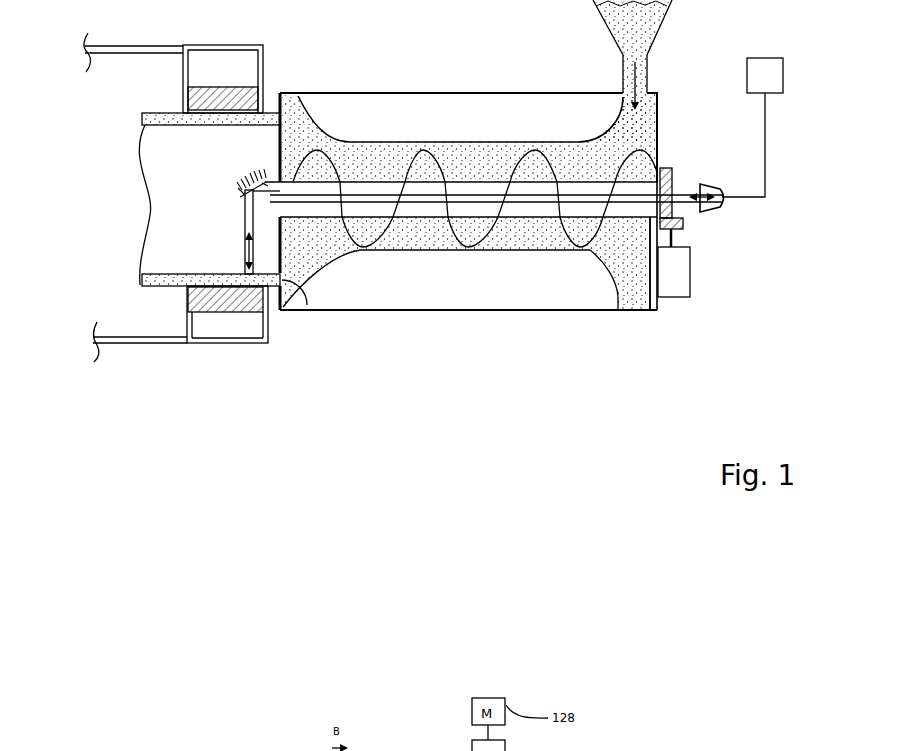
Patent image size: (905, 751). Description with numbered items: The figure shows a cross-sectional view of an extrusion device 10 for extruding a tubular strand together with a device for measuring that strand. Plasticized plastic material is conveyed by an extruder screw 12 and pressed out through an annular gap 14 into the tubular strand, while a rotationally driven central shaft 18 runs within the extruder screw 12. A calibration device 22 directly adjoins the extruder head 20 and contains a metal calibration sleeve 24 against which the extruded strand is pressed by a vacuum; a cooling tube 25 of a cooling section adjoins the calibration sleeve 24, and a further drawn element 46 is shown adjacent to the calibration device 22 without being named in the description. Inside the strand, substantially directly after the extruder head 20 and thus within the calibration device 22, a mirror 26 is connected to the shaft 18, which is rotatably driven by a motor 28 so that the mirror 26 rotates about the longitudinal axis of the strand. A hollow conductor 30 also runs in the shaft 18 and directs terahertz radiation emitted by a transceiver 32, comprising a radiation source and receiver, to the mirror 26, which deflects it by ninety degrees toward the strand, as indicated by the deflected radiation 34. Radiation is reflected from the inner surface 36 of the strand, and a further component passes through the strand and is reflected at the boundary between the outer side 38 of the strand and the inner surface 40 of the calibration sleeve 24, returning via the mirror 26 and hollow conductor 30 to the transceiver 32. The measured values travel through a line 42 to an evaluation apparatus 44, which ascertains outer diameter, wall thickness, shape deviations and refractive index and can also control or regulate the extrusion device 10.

The extrusion device 10 is at (462, 84).
The extruder screw 12 is at (558, 215).
The annular gap 14 is at (298, 306).
The central shaft 18 is at (623, 212).
The extruder head 20 is at (294, 105).
The calibration device 22 is at (230, 75).
The calibration sleeve 24 is at (205, 300).
The cooling tube 25 is at (122, 345).
The mirror 26 is at (245, 185).
The motor 28 is at (691, 273).
The hollow conductor 30 is at (427, 203).
The transceiver 32 is at (704, 185).
The deflected radiation 34 is at (227, 268).
The inner surface 36 is at (143, 258).
The outer side 38 is at (150, 287).
The inner surface of the calibration sleeve 40 is at (207, 272).
The line 42 is at (766, 176).
The evaluation apparatus 44 is at (765, 75).
The upper plate 46 is at (160, 120).